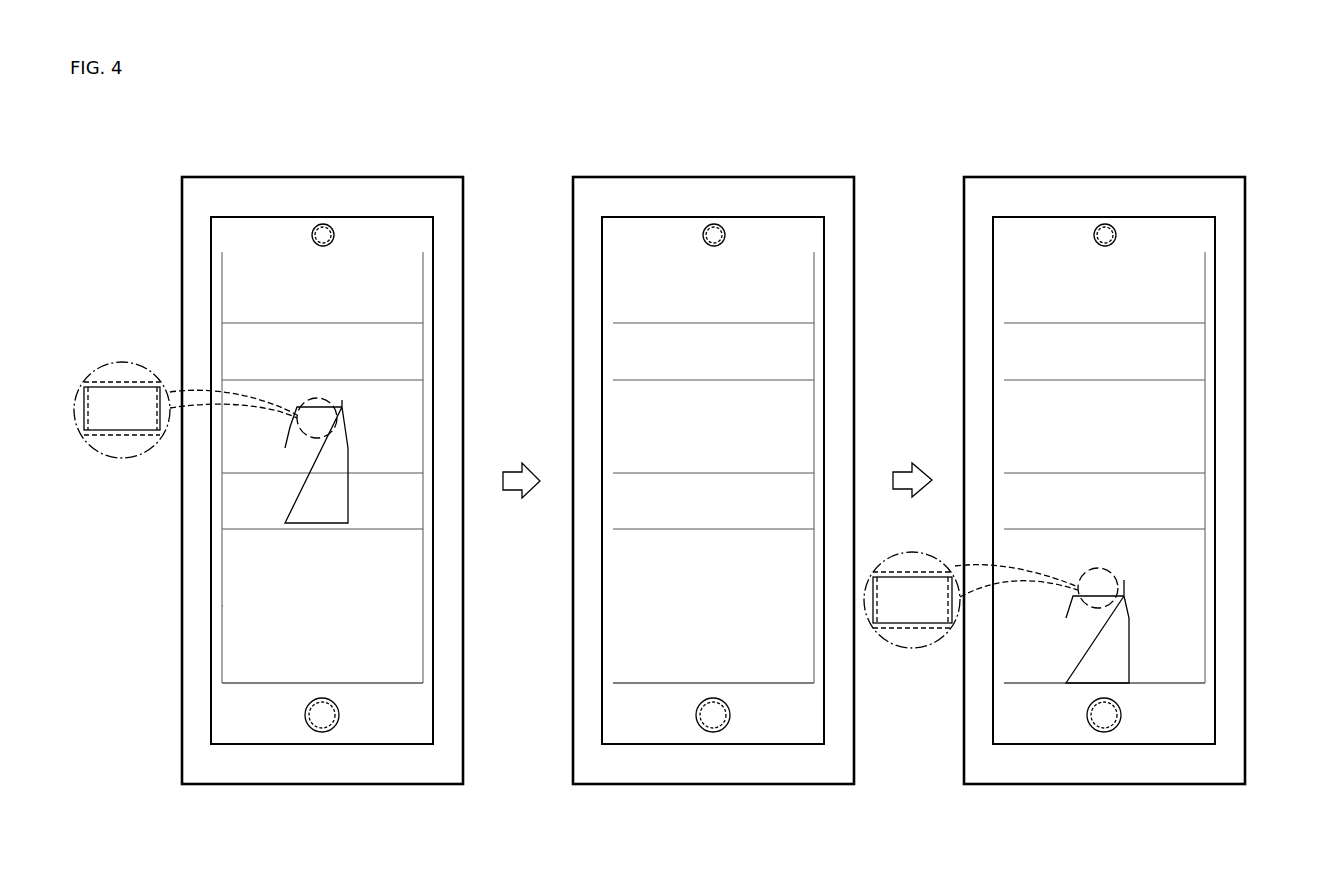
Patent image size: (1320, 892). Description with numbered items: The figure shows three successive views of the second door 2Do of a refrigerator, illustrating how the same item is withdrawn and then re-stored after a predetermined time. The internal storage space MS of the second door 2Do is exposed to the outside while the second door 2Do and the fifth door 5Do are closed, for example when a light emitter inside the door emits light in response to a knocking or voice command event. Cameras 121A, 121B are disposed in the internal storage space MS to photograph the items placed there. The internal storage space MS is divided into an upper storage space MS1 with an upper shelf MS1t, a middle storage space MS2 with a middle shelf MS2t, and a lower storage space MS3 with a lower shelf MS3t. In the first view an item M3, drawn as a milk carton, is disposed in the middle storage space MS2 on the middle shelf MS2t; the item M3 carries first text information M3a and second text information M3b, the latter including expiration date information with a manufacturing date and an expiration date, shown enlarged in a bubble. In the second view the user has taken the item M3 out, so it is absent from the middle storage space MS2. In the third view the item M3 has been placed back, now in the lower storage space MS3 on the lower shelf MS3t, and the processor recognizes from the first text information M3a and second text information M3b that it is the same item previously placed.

The second door 2Do is at (254, 172).
The fifth door 5Do is at (407, 232).
The camera 121A is at (333, 228).
The camera 121B is at (338, 720).
The internal storage space MS is at (238, 284).
The upper storage space MS1 is at (375, 293).
The upper shelf MS1t is at (375, 353).
The middle storage space MS2 is at (375, 441).
The middle shelf MS2t is at (630, 485).
The lower storage space MS3 is at (630, 586).
The lower shelf MS3t is at (630, 641).
The item M3 is at (287, 521).
The first text information M3a is at (290, 487).
The second text information M3b is at (121, 382).